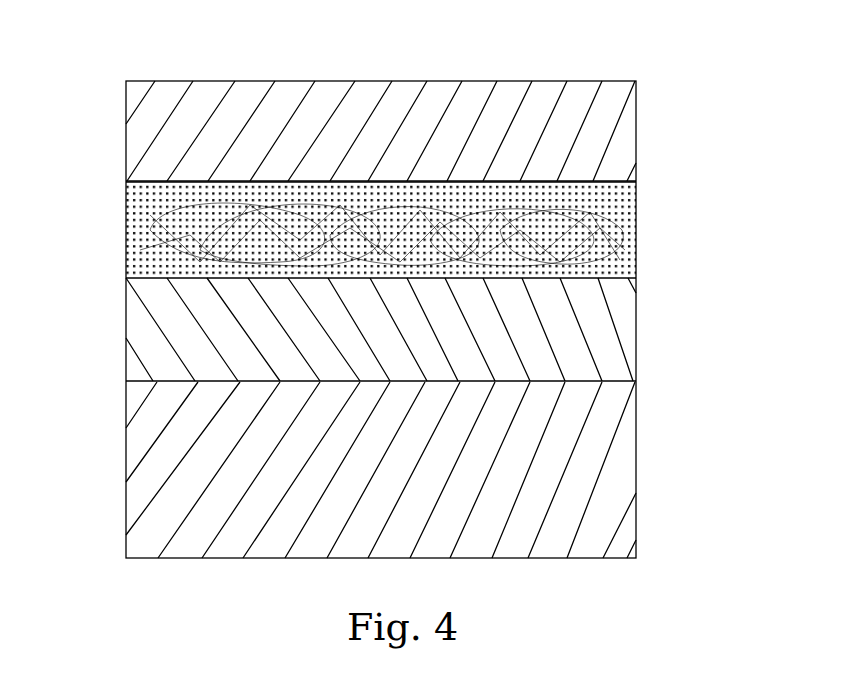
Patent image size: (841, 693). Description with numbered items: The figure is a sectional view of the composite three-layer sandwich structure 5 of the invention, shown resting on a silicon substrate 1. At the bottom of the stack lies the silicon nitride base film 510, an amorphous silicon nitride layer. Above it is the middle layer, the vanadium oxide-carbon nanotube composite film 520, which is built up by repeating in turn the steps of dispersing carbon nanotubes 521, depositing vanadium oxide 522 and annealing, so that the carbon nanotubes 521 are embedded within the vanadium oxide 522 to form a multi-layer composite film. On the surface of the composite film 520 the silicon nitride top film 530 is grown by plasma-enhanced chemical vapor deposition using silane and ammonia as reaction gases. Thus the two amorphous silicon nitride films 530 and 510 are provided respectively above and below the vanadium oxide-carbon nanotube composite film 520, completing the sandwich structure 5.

The composite three-layer sandwich structure 5 is at (398, 77).
The silicon nitride top film 530 is at (612, 132).
The vanadium oxide-carbon nanotube composite film 520 is at (387, 227).
The vanadium oxide 522 is at (621, 191).
The carbon nanotube 521 is at (612, 246).
The silicon nitride base film 510 is at (612, 335).
The silicon substrate 1 is at (612, 470).